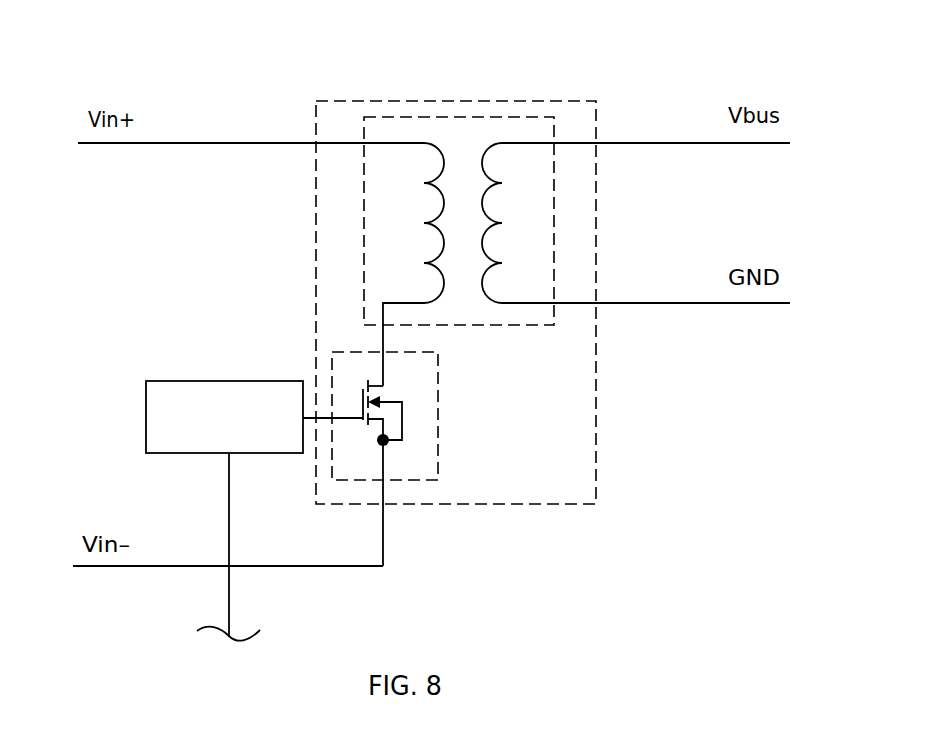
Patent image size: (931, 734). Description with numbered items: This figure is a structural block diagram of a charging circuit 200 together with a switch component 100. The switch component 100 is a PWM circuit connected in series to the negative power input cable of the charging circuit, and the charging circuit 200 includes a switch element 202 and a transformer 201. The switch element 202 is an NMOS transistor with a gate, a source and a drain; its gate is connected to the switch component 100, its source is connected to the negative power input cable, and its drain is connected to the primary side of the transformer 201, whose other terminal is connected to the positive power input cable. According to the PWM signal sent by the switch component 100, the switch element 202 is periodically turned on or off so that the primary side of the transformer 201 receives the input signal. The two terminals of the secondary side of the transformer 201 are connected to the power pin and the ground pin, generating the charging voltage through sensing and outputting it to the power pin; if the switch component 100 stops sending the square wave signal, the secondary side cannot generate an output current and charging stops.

The switch component 100 is at (146, 413).
The charging circuit 200 is at (372, 101).
The transformer 201 is at (445, 117).
The switch element 202 is at (423, 480).